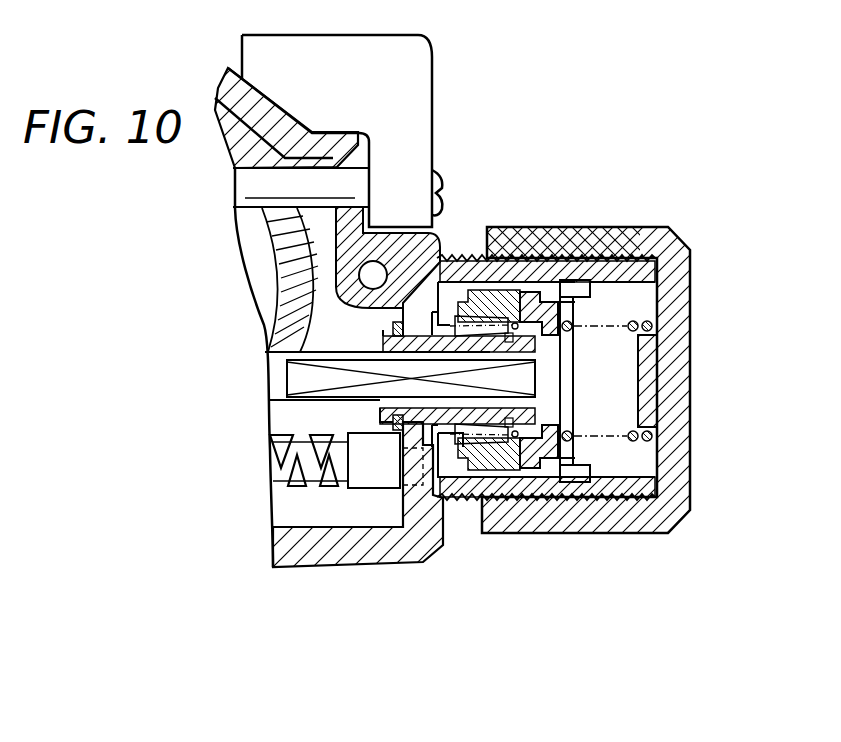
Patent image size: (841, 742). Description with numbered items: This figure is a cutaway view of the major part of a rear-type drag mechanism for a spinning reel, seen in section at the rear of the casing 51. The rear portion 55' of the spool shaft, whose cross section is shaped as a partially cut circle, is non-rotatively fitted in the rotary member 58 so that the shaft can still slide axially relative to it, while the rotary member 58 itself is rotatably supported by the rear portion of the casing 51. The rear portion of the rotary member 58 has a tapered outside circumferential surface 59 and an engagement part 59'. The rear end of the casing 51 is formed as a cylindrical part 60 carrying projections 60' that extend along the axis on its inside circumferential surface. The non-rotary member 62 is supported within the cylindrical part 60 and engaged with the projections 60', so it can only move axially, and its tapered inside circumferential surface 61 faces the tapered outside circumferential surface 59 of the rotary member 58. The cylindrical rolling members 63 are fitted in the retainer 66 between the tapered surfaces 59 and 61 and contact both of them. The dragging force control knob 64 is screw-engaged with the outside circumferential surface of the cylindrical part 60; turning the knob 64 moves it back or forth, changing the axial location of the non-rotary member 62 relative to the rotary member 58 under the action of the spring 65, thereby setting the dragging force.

The casing 51 is at (320, 560).
The rear portion of the spool shaft 55' is at (411, 488).
The rotary member 58 is at (445, 325).
The tapered outside circumferential surface 59 is at (489, 241).
The engagement part 59' is at (472, 536).
The cylindrical part 60 is at (615, 223).
The projections 60' is at (675, 364).
The tapered inside circumferential surface 61 is at (535, 295).
The non-rotary member 62 is at (478, 480).
The cylindrical rolling members 63 is at (505, 322).
The dragging force control knob 64 is at (677, 378).
The spring 65 is at (643, 313).
The retainer 66 is at (520, 440).